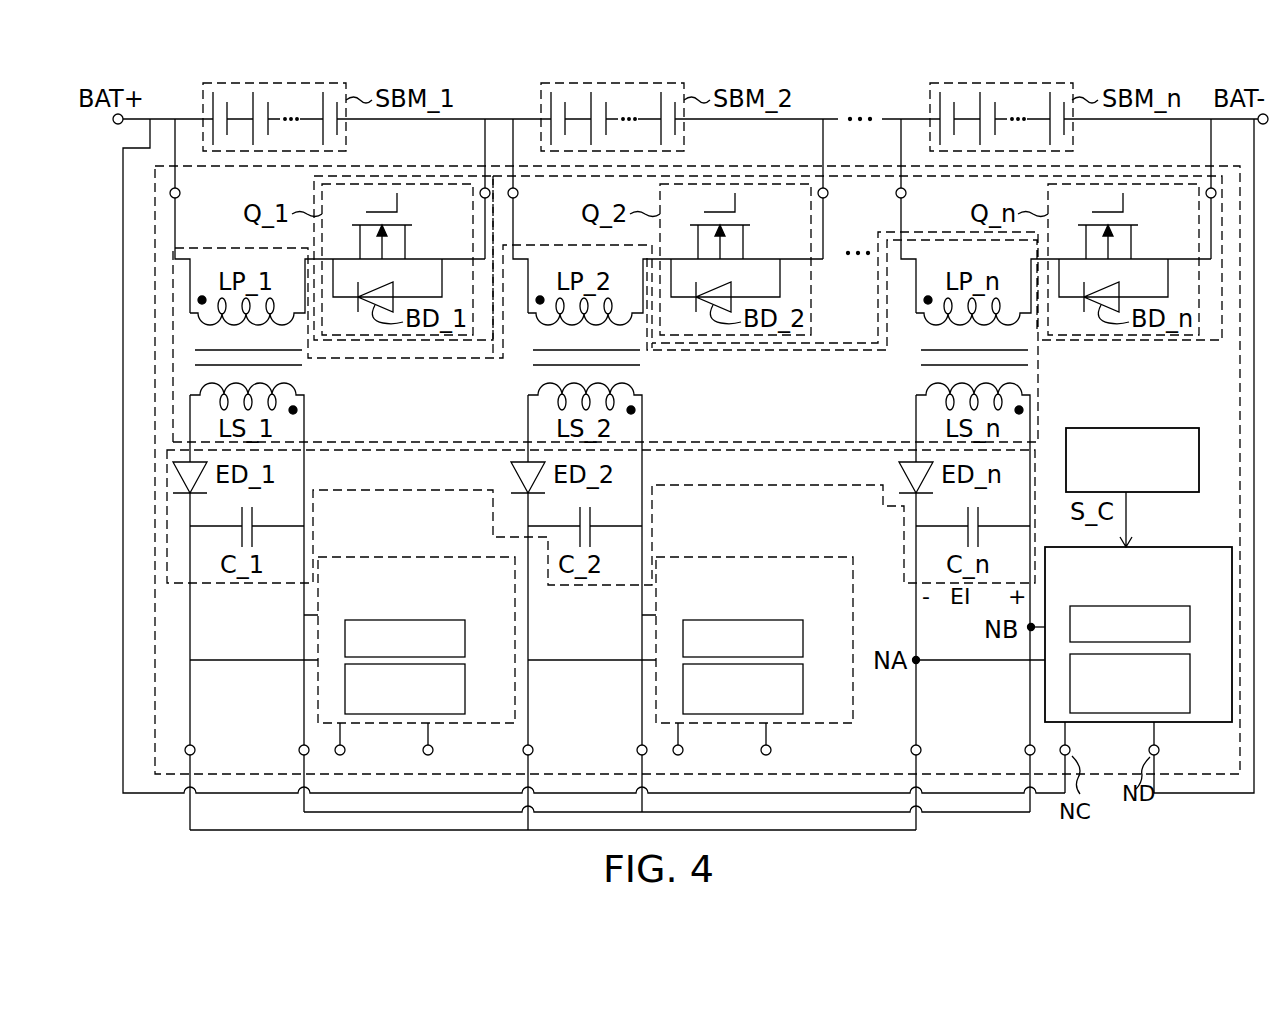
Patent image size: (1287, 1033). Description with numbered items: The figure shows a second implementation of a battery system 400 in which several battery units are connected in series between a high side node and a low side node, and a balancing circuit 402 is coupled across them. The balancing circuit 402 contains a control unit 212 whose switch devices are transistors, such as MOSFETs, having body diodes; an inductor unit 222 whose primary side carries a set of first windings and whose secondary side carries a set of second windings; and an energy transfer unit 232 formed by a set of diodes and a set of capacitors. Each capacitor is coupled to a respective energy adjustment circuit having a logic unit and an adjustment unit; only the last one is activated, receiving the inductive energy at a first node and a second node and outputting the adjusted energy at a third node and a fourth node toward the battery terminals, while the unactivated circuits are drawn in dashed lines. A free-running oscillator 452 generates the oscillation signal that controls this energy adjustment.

The control unit 212 is at (388, 176).
The inductor unit 222 is at (1040, 365).
The energy transfer unit 232 is at (1040, 456).
The battery system 400 is at (1133, 813).
The balancing circuit 402 is at (1105, 775).
The free-running oscillator 452 is at (1130, 428).